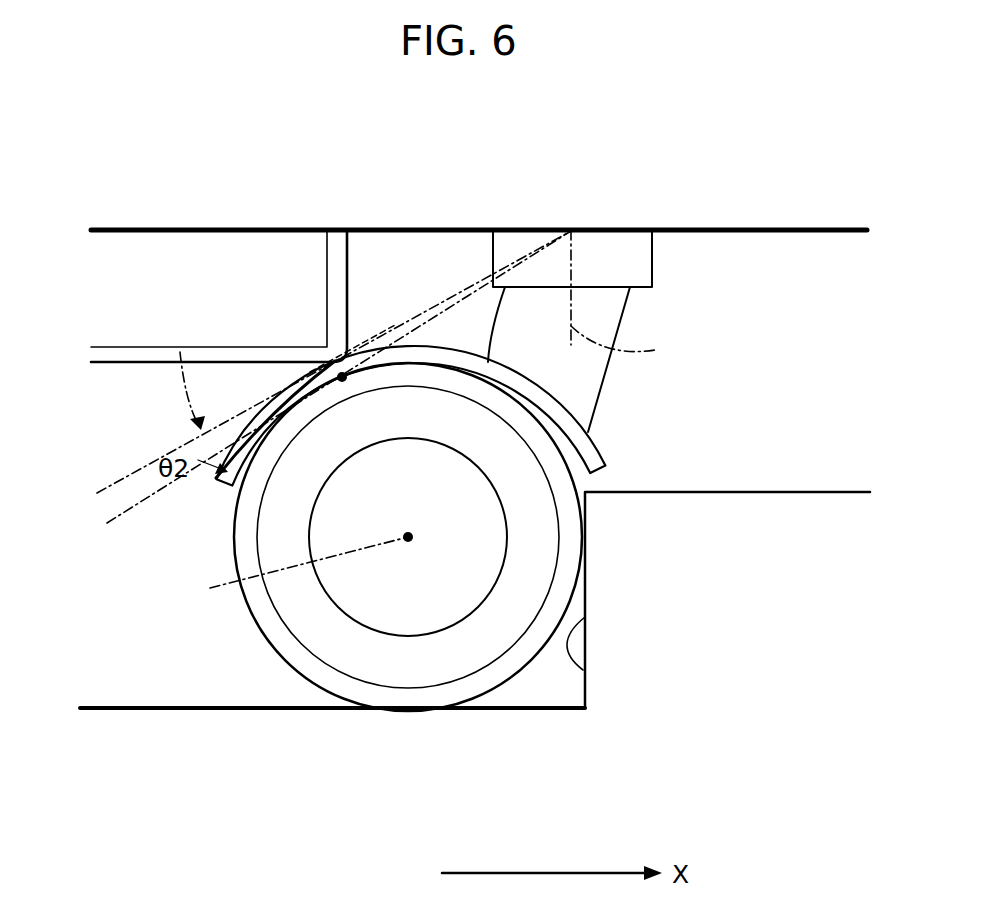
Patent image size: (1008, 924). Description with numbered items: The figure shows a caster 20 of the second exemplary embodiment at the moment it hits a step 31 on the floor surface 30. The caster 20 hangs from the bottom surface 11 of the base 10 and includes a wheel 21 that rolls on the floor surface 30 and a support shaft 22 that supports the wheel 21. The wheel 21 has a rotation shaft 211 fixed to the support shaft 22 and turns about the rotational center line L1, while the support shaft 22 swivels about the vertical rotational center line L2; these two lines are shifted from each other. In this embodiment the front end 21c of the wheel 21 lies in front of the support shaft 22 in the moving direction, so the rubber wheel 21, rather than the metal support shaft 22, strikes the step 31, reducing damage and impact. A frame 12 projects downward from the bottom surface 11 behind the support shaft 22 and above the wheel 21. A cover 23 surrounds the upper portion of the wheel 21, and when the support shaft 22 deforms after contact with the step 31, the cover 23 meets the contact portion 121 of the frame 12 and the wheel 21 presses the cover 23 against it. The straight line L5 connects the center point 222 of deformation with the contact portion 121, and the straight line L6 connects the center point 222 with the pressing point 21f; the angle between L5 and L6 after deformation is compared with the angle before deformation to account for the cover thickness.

The base 10 is at (477, 182).
The bottom surface 11 is at (780, 233).
The frame 12 is at (160, 363).
The contact portion 121 is at (352, 360).
The caster 20 is at (482, 325).
The wheel 21 is at (484, 537).
The front end of the wheel 21c is at (586, 538).
The pressing point 21f is at (345, 381).
The rotation shaft 211 is at (487, 527).
The support shaft 22 is at (617, 323).
The center point of deformation 222 is at (571, 230).
The cover 23 is at (557, 397).
The floor surface 30 is at (113, 710).
The step 31 is at (587, 619).
The rotational center line L1 is at (293, 569).
The rotational center line L2 is at (633, 297).
The straight line L5 is at (126, 477).
The straight line L6 is at (145, 500).